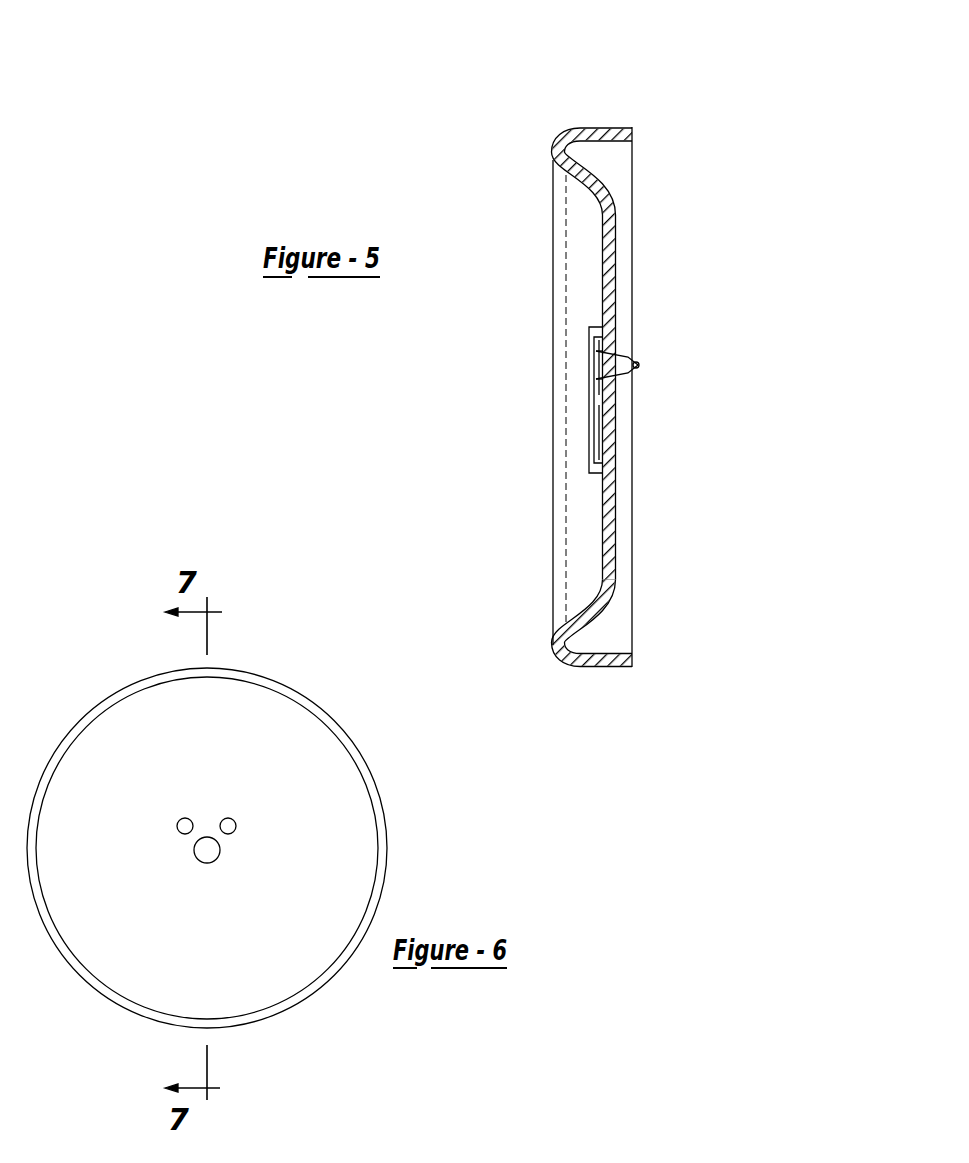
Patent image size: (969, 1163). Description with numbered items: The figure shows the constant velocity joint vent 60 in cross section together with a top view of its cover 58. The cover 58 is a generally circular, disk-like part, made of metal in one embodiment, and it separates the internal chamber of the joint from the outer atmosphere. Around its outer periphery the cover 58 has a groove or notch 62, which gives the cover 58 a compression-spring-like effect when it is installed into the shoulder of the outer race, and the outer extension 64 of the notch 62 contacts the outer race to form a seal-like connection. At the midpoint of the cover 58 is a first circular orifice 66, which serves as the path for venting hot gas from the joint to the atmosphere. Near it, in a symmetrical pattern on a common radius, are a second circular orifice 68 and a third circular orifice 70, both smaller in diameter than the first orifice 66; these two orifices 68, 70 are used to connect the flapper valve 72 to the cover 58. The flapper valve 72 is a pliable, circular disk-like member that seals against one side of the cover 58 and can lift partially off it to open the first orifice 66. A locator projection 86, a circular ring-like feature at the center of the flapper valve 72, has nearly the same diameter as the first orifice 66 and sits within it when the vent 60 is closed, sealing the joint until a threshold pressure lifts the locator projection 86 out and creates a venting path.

In FIG. 5, the cover 58 is at (612, 230).
In FIG. 6, the cover 58 is at (272, 717).
In FIG. 5, the vent 60 is at (514, 212).
In FIG. 5, the groove or notch 62 is at (588, 158).
In FIG. 6, the groove or notch 62 is at (350, 748).
In FIG. 5, the outer extension 64 is at (612, 133).
In FIG. 6, the circular orifice 66 is at (207, 850).
In FIG. 6, the second circular orifice 68 is at (185, 826).
In FIG. 6, the third circular orifice 70 is at (228, 826).
In FIG. 5, the flapper valve 72 is at (590, 443).
In FIG. 5, the locator projection 86 is at (605, 418).